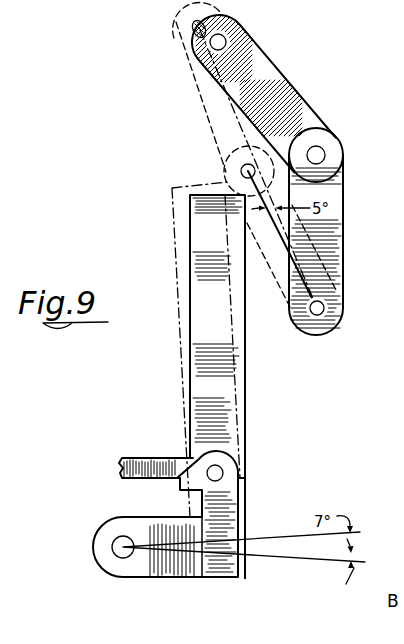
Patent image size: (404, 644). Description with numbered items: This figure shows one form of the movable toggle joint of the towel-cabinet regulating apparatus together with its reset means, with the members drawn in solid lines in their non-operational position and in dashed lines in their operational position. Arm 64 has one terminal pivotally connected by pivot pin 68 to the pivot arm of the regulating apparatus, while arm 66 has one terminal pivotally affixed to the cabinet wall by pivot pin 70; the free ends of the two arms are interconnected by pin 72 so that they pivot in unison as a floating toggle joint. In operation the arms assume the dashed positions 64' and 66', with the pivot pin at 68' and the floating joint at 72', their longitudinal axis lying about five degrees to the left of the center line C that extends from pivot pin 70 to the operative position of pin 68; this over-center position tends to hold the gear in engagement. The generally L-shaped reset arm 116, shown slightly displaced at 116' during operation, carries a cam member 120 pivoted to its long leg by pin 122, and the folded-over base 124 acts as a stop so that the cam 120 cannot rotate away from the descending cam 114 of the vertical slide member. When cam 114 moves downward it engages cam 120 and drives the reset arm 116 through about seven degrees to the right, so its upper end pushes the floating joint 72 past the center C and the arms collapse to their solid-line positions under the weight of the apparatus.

The arm 64 is at (275, 94).
The arm in operational position 64' is at (179, 97).
The arm 66 is at (339, 245).
The arm in operational position 66' is at (321, 239).
The pivot pin 68 is at (209, 38).
The pivot pin in operational position 68' is at (197, 20).
The pivot pin 70 is at (321, 314).
The pin 72 is at (334, 155).
The floating joint pin in operational position 72' is at (221, 171).
The center line C is at (240, 122).
The cam 114 is at (142, 457).
The reset arm 116 is at (251, 386).
The reset arm in displaced position 116' is at (175, 349).
The cam member 120 is at (226, 511).
The pin 122 is at (222, 471).
The folded-over base stop 124 is at (244, 571).